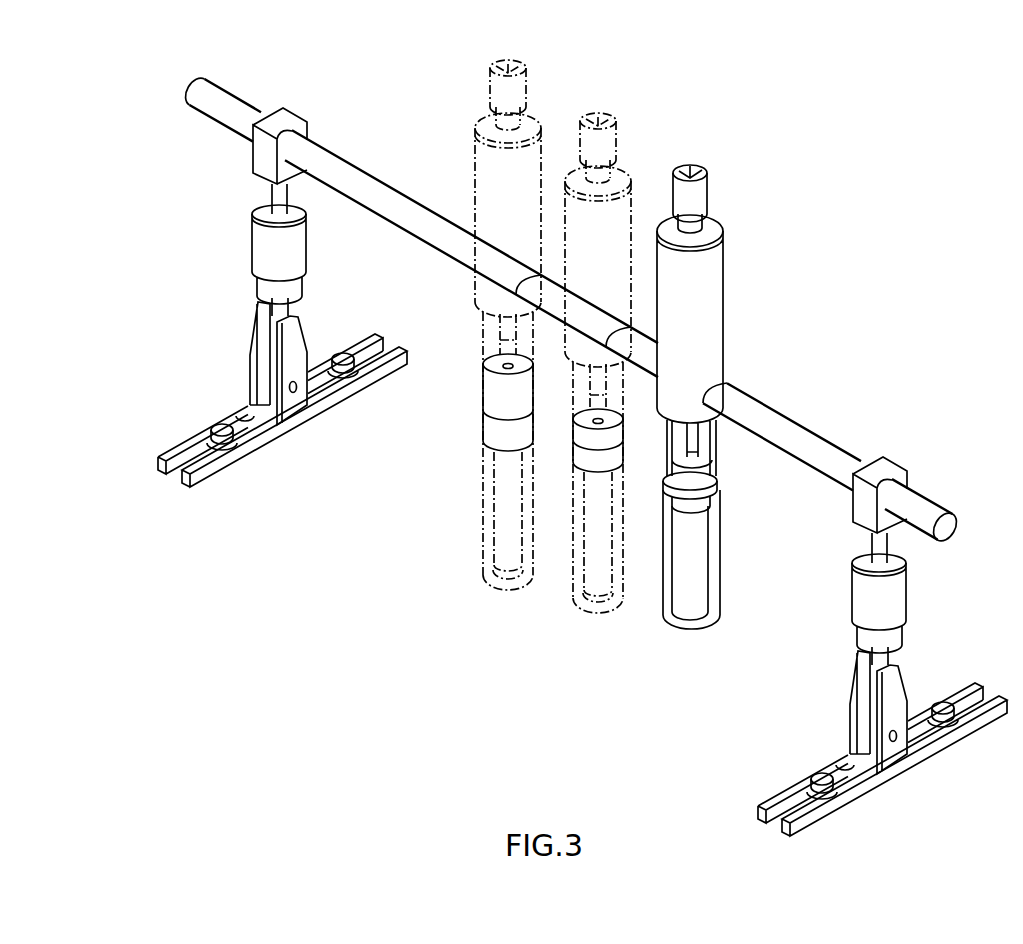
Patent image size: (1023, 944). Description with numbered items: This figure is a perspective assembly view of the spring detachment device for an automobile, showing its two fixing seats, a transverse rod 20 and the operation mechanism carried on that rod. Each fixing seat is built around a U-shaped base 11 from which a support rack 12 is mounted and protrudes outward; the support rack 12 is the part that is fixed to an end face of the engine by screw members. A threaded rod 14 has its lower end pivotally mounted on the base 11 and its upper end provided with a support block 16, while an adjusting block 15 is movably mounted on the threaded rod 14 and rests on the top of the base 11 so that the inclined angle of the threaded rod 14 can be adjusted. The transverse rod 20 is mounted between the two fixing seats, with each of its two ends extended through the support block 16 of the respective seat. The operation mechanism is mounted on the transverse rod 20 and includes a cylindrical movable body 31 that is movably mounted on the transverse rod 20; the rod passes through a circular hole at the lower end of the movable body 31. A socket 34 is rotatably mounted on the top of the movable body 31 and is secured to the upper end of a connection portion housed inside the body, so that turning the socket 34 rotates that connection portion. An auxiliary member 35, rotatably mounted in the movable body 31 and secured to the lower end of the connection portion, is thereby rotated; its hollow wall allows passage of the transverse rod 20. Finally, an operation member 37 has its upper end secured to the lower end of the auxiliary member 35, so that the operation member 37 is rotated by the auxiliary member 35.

The U-shaped base 11 is at (293, 411).
The support rack 12 is at (215, 468).
The threaded rod 14 is at (277, 198).
The adjusting block 15 is at (258, 262).
The support block 16 is at (258, 150).
The transverse rod 20 is at (395, 190).
The movable body 31 is at (716, 323).
The socket 34 is at (708, 195).
The auxiliary member 35 is at (714, 487).
The operation member 37 is at (719, 580).